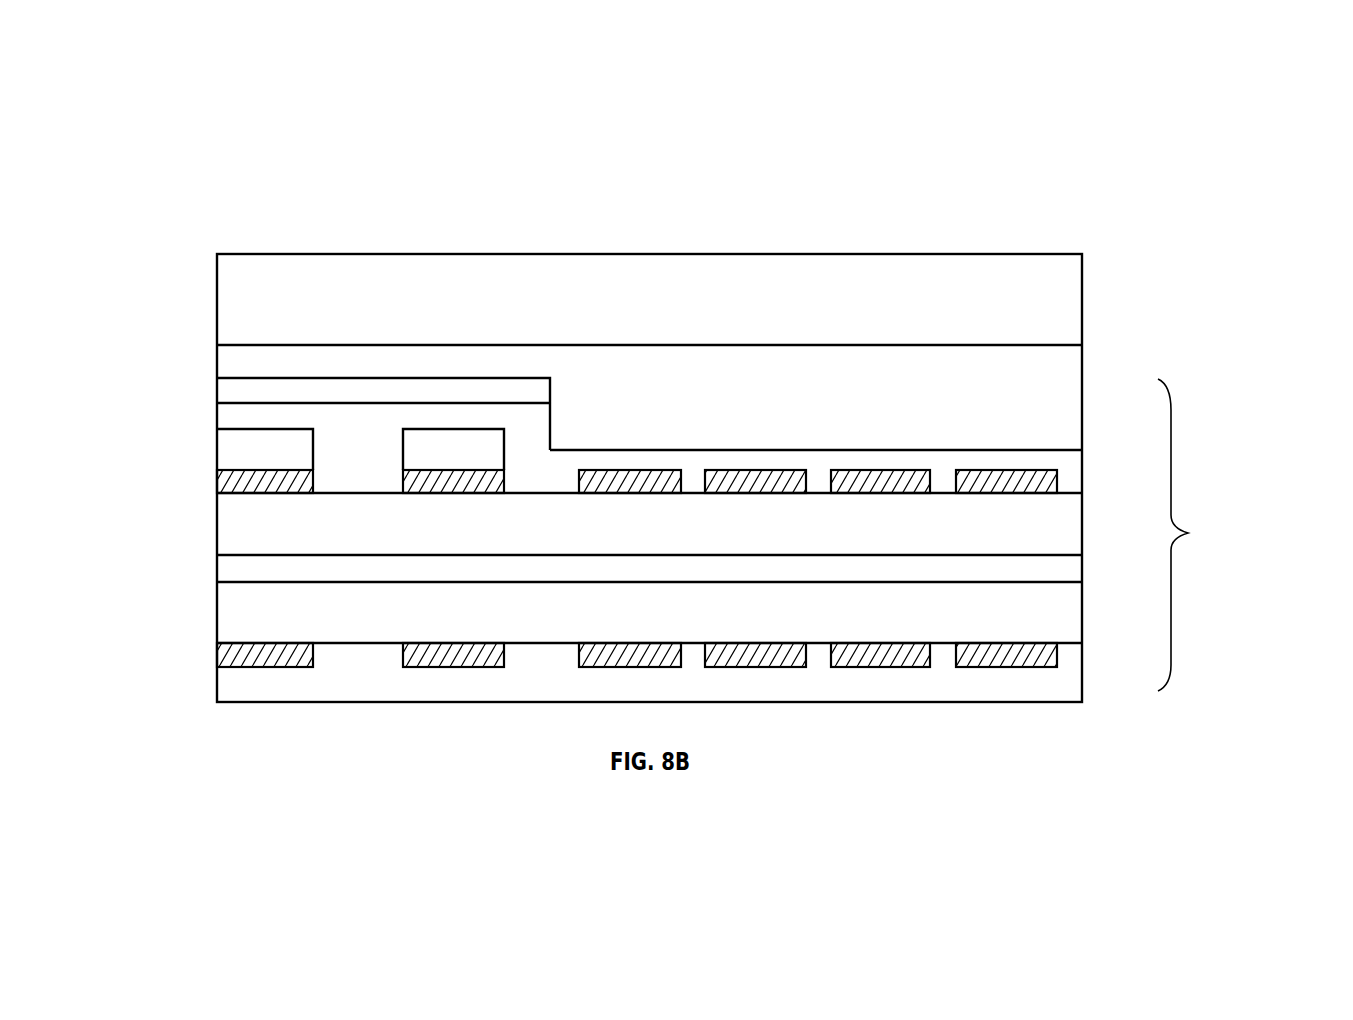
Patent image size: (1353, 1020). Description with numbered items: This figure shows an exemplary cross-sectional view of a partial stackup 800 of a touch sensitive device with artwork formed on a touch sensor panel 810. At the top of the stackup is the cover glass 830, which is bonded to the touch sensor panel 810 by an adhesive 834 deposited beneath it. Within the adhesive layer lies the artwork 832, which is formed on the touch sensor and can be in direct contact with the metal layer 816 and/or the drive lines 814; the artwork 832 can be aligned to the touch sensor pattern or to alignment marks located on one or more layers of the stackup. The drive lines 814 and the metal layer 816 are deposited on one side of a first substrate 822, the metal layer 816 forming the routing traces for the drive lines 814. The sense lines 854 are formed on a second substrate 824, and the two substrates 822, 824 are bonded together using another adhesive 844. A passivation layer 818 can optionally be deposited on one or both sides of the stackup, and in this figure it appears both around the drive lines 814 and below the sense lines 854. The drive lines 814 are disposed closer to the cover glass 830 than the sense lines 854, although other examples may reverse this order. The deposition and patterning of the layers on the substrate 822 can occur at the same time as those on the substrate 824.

The partial stackup 800 is at (357, 189).
The cover glass 830 is at (810, 268).
The adhesive 834 is at (1066, 373).
The artwork 832 is at (233, 394).
The metal layer 816 is at (223, 438).
The passivation layer 818 is at (1066, 470).
The drive lines 814 is at (220, 488).
The substrate 822 is at (1067, 538).
The adhesive 844 is at (1067, 574).
The second substrate 824 is at (1067, 615).
The sense lines 854 is at (222, 650).
The touch sensor panel 810 is at (1246, 535).